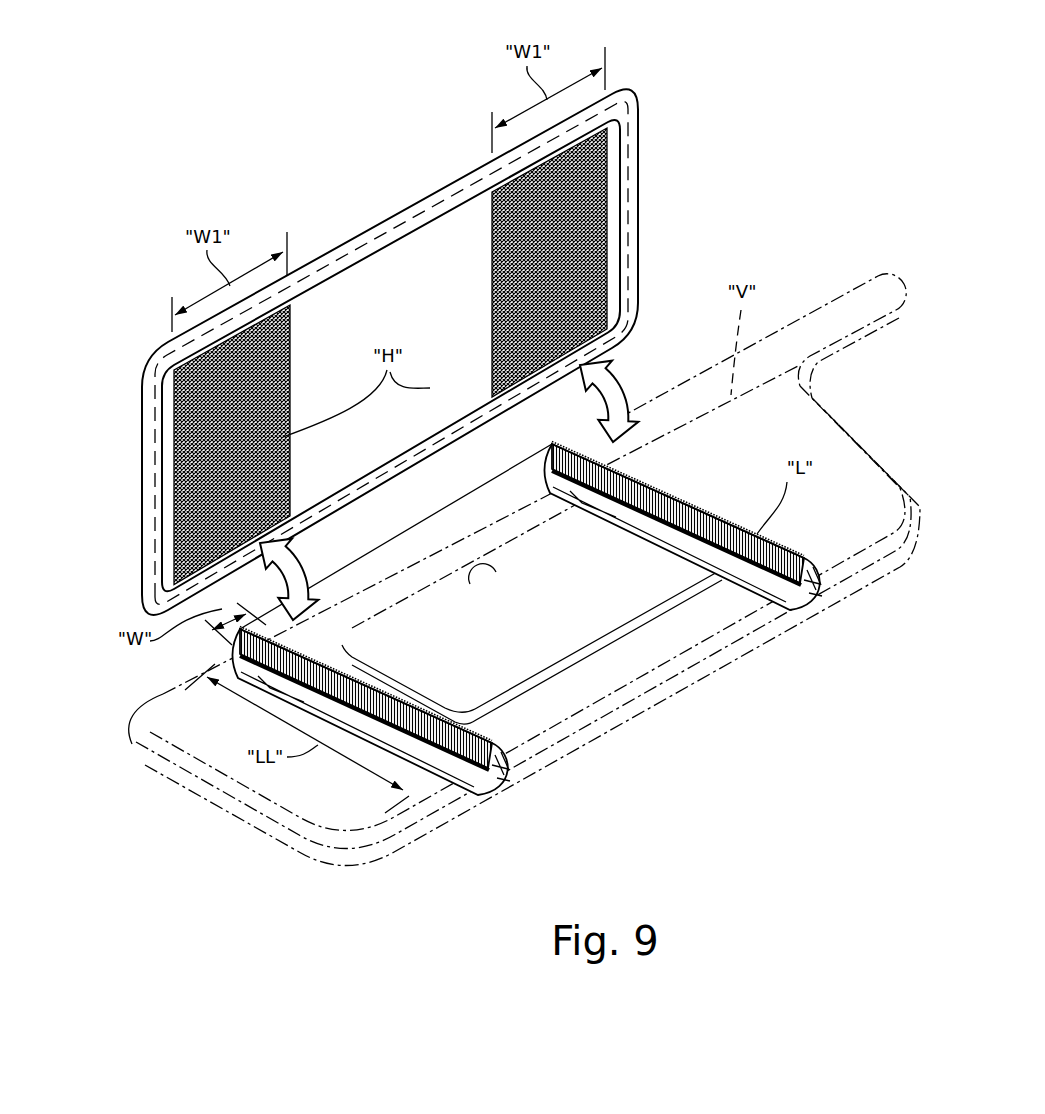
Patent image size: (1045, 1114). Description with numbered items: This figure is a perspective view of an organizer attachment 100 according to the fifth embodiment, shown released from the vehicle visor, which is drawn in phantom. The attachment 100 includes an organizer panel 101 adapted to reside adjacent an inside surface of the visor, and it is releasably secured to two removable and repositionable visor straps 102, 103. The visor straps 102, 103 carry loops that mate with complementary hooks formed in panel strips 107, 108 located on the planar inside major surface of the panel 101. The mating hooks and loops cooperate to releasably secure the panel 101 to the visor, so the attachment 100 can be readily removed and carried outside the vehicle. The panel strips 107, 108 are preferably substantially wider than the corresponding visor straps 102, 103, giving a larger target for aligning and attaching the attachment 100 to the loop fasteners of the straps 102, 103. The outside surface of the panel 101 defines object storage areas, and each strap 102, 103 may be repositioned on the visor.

The organizer attachment 100 is at (100, 252).
The organizer panel 101 is at (610, 97).
The visor strap 102 is at (510, 780).
The visor strap 103 is at (824, 594).
The panel strip 107 is at (187, 478).
The panel strip 108 is at (598, 258).